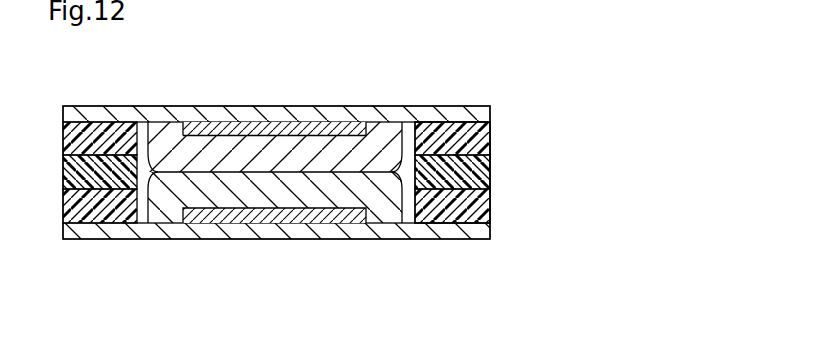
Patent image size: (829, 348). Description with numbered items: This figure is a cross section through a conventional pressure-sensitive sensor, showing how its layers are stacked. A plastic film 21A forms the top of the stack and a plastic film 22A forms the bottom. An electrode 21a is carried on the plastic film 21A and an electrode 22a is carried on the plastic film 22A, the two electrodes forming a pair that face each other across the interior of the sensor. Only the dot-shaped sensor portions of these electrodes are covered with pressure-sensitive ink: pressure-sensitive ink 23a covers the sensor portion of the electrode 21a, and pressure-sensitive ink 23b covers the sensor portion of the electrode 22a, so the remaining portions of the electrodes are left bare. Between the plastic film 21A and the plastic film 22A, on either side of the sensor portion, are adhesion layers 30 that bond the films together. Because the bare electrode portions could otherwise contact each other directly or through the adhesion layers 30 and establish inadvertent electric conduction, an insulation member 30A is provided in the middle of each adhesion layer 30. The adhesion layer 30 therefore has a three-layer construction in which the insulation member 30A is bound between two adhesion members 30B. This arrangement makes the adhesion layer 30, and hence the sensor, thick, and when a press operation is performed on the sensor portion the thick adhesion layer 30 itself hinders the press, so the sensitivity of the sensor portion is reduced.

The plastic film 21A is at (150, 106).
The plastic film 22A is at (150, 239).
The electrode 21a is at (280, 122).
The electrode 22a is at (265, 219).
The pressure-sensitive ink 23a is at (383, 125).
The pressure-sensitive ink 23b is at (385, 210).
The adhesion layer 30 is at (627, 115).
The insulation member 30A is at (488, 172).
The adhesion member 30B is at (488, 132).